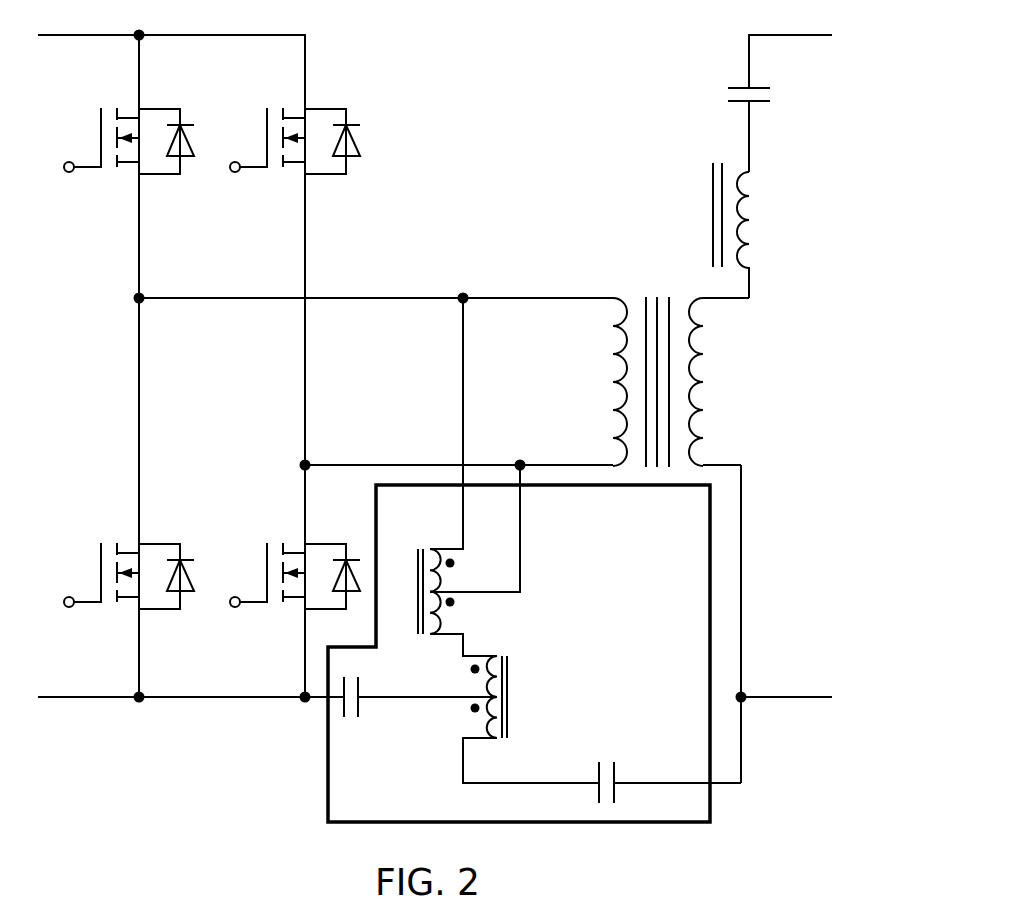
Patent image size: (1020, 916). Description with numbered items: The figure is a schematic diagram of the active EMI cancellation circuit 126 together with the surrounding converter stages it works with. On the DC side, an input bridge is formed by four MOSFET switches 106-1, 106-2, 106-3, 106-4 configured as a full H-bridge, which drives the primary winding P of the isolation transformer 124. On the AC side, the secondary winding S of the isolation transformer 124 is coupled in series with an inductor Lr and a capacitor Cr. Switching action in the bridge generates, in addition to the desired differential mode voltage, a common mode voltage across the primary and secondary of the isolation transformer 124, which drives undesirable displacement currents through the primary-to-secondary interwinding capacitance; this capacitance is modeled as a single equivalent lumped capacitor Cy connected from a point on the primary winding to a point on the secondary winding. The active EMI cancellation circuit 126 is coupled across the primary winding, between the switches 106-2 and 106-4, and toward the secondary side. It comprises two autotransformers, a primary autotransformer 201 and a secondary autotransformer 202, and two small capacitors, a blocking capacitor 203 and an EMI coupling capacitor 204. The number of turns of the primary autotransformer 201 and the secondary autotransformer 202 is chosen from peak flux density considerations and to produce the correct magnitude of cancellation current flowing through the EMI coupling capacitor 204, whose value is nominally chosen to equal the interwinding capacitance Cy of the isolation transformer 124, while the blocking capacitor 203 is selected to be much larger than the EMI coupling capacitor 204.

The switch 106-1 is at (129, 124).
The switch 106-2 is at (129, 558).
The switch 106-3 is at (295, 124).
The switch 106-4 is at (295, 558).
The isolation transformer 124 is at (637, 280).
The active EMI cancellation circuit 126 is at (327, 793).
The primary autotransformer 201 is at (415, 588).
The secondary autotransformer 202 is at (508, 695).
The blocking capacitor 203 is at (361, 705).
The EMI coupling capacitor 204 is at (613, 778).
The capacitor Cr is at (766, 103).
The inductor Lr is at (716, 230).
The primary-to-secondary interwinding capacitance Cy is at (721, 338).